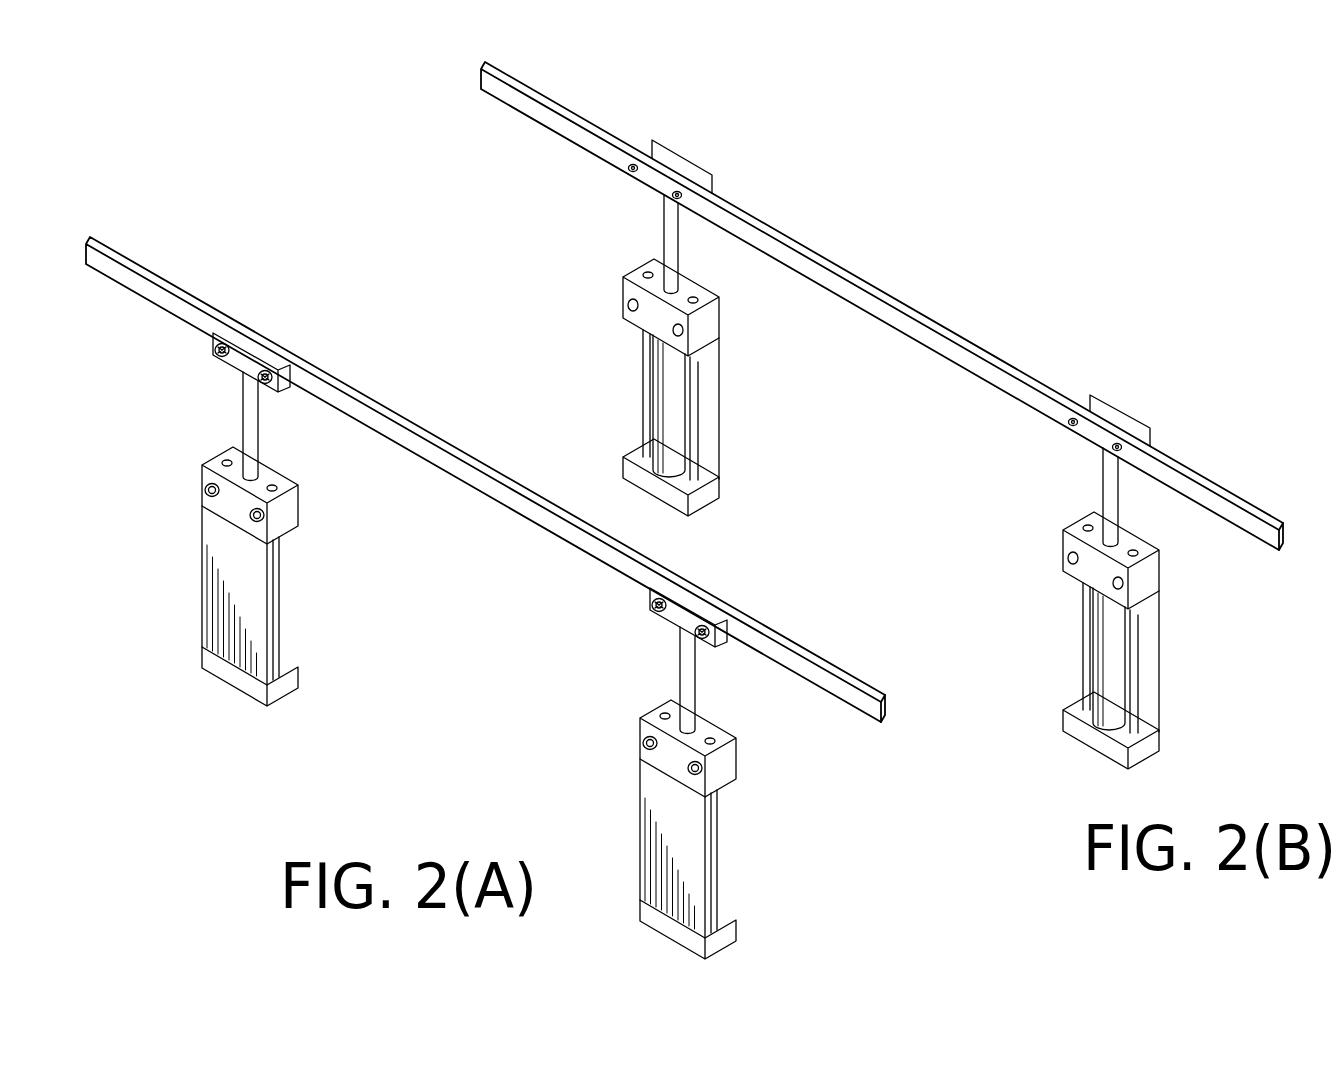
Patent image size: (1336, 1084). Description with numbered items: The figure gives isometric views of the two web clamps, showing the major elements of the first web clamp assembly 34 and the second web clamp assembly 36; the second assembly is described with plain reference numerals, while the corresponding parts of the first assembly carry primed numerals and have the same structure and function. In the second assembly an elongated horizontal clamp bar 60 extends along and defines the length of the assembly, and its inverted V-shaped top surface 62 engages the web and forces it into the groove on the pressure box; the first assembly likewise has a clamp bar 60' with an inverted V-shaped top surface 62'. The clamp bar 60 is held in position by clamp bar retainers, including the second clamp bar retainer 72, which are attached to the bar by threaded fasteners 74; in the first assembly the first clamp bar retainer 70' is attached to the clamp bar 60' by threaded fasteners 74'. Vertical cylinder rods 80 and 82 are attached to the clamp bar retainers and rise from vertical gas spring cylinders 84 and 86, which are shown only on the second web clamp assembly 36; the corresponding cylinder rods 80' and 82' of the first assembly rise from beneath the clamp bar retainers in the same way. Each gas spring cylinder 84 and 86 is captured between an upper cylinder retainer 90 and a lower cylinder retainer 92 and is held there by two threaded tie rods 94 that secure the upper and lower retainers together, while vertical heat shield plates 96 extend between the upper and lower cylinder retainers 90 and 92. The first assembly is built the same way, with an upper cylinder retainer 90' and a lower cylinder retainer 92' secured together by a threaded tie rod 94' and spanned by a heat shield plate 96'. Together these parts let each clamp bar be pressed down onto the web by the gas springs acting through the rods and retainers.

In FIG. 2A, the first web clamp assembly 34 is at (246, 806).
In FIG. 2B, the second web clamp assembly 36 is at (1036, 253).
In FIG. 2B, the clamp bar 60 is at (882, 306).
In FIG. 2A, the clamp bar 60' is at (485, 479).
In FIG. 2B, the inverted V-shaped top surface 62 is at (1282, 502).
In FIG. 2A, the inverted V-shaped top surface 62' is at (886, 674).
In FIG. 2A, the first clamp bar retainer 70' is at (500, 466).
In FIG. 2B, the second clamp bar retainer 72 is at (673, 160).
In FIG. 2B, the threaded fasteners 74 is at (835, 324).
In FIG. 2A, the threaded fasteners 74' is at (416, 490).
In FIG. 2B, the cylinder rod 80 is at (702, 244).
In FIG. 2A, the cylinder rod 80' is at (292, 426).
In FIG. 2B, the cylinder rod 82 is at (1143, 497).
In FIG. 2A, the cylinder rod 82' is at (730, 680).
In FIG. 2B, the gas spring cylinder 84 is at (672, 407).
In FIG. 2B, the gas spring cylinder 86 is at (1112, 658).
In FIG. 2B, the upper cylinder retainer 90 is at (924, 434).
In FIG. 2A, the upper cylinder retainer 90' is at (508, 622).
In FIG. 2B, the lower cylinder retainer 92 is at (928, 608).
In FIG. 2A, the lower cylinder retainer 92' is at (510, 803).
In FIG. 2B, the threaded tie rods 94 is at (854, 531).
In FIG. 2A, the threaded tie rod 94' is at (535, 735).
In FIG. 2B, the heat shield plate 96 is at (977, 535).
In FIG. 2A, the heat shield plate 96' is at (418, 722).